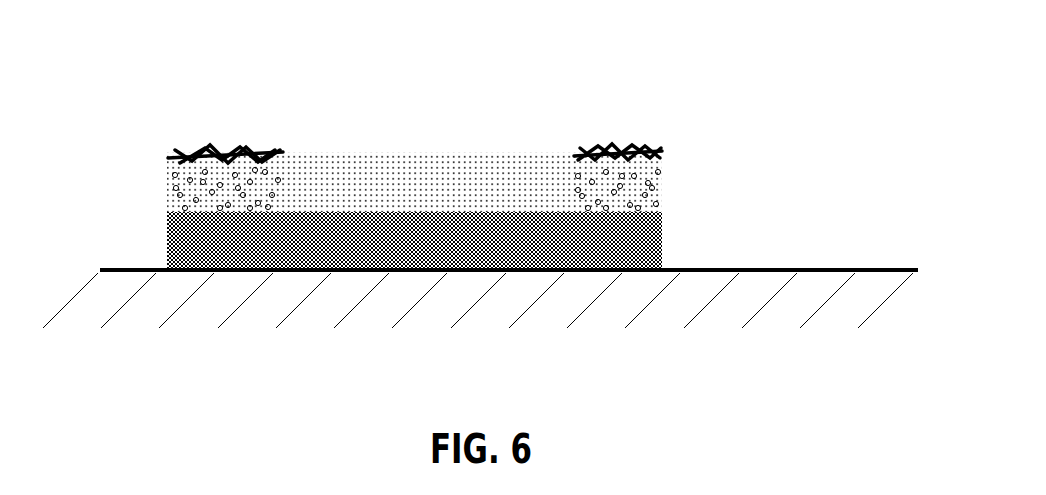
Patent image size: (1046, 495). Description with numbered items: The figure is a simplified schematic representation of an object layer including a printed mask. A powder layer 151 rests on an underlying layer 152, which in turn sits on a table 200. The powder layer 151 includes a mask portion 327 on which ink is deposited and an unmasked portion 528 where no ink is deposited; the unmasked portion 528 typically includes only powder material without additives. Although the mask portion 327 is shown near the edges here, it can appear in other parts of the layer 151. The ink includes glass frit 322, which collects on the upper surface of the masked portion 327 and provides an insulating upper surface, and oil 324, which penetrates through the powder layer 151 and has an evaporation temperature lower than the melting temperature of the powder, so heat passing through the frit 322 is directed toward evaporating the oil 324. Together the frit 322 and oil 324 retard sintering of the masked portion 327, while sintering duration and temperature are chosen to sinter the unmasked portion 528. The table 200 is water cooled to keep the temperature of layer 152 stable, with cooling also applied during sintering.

The powder layer 151 is at (353, 177).
The layer 152 is at (666, 250).
The table 200 is at (835, 267).
The glass frit 322 is at (221, 143).
The oil 324 is at (667, 197).
The mask portion 327 is at (214, 110).
The unmasked portion 528 is at (459, 134).